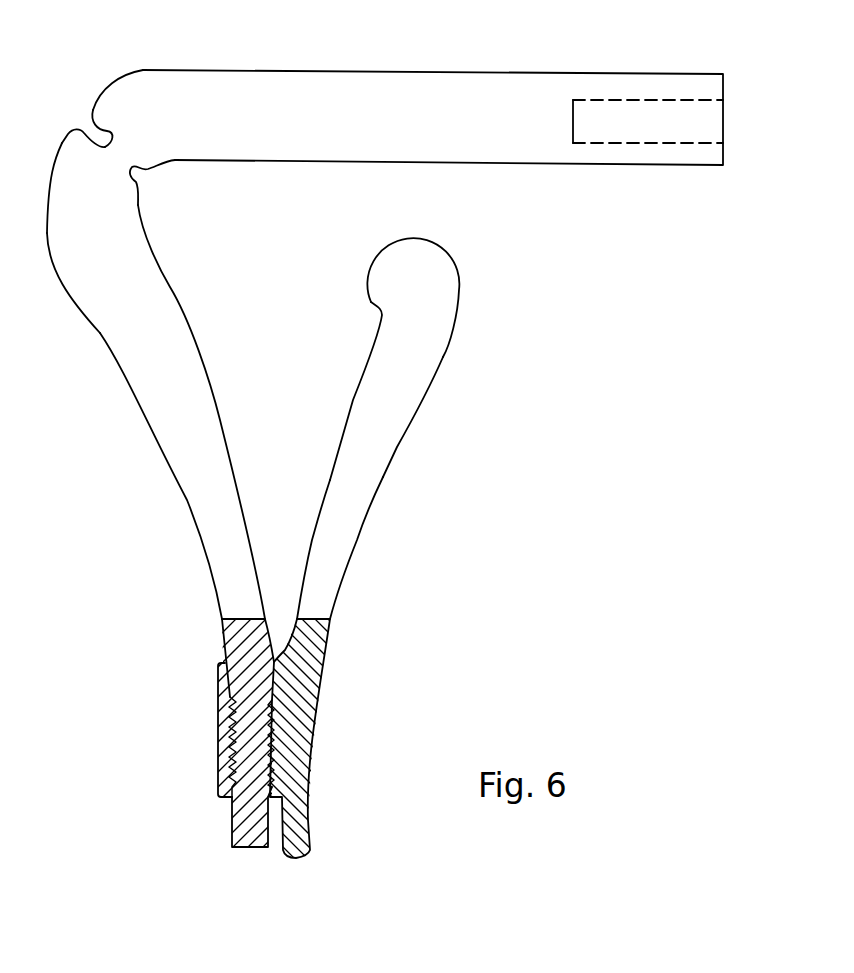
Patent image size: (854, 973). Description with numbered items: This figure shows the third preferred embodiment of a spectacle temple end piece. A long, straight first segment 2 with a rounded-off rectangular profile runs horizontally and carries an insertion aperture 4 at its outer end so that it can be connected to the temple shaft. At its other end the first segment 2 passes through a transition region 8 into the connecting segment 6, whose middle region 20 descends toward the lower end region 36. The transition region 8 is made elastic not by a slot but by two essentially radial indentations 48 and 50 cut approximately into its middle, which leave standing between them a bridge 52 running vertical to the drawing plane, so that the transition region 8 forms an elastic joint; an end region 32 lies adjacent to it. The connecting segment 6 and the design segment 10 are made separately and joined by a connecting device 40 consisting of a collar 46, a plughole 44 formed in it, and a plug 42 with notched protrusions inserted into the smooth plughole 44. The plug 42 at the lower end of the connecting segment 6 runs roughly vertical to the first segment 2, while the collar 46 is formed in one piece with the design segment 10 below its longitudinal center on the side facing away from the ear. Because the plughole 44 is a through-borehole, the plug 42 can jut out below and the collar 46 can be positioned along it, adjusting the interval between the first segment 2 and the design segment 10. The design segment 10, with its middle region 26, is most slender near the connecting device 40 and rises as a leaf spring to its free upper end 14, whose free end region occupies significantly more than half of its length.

The first segment 2 is at (355, 87).
The insertion aperture 4 is at (593, 108).
The connecting segment 6 is at (169, 412).
The transition region 8 is at (83, 163).
The design segment 10 is at (412, 434).
The end 14 is at (440, 265).
The middle region 20 is at (157, 378).
The middle region 26 is at (343, 480).
The end region 32 is at (87, 263).
The end region 36 is at (238, 640).
The connecting device 40 is at (343, 653).
The plug 42 is at (248, 800).
The plughole 44 is at (225, 772).
The collar 46 is at (218, 680).
The indentation 48 is at (90, 125).
The indentation 50 is at (143, 177).
The bridge 52 is at (117, 147).